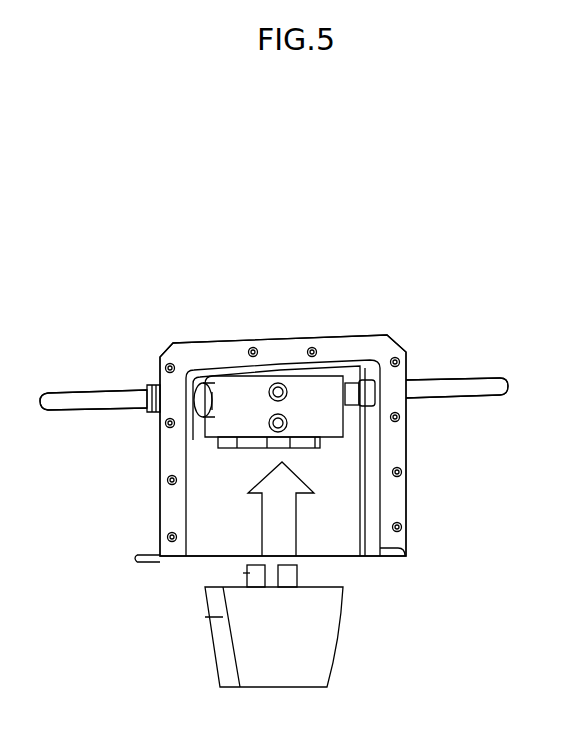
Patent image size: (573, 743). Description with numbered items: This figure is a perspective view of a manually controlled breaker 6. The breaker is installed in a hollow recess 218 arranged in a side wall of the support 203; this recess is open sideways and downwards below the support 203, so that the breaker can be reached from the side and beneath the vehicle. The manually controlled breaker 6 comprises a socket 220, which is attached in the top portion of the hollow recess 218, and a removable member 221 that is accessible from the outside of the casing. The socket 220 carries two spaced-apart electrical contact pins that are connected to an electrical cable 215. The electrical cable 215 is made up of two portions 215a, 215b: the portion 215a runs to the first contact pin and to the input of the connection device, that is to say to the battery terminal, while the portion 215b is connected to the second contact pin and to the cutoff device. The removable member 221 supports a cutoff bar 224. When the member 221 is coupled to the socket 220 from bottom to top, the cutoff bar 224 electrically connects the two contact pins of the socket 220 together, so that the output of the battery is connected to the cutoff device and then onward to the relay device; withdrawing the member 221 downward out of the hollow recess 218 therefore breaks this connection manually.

The manually controlled breaker 6 is at (122, 536).
The support 203 is at (173, 463).
The electrical cable 215 is at (100, 390).
The portion of the electrical cable 215a is at (80, 400).
The portion of the electrical cable 215b is at (468, 388).
The hollow recess 218 is at (340, 527).
The socket 220 is at (320, 415).
The removable member 221 is at (242, 655).
The cutoff bar 224 is at (247, 573).